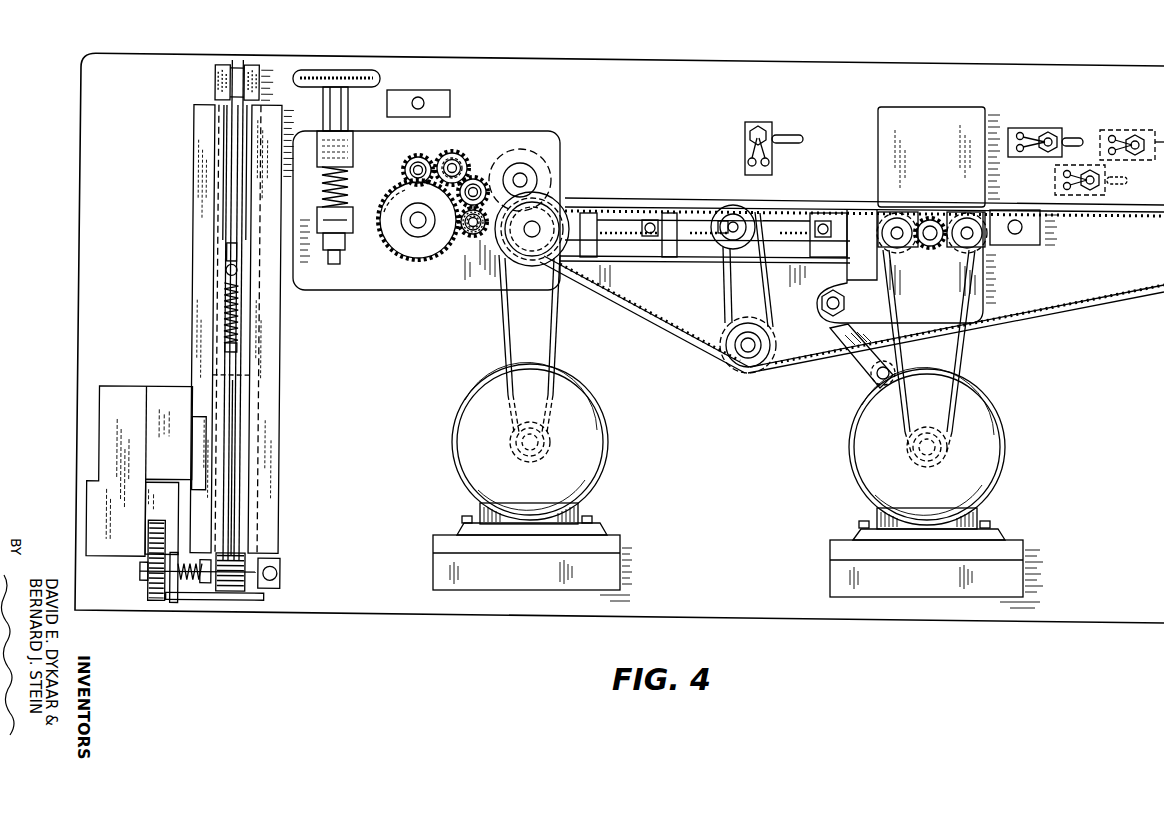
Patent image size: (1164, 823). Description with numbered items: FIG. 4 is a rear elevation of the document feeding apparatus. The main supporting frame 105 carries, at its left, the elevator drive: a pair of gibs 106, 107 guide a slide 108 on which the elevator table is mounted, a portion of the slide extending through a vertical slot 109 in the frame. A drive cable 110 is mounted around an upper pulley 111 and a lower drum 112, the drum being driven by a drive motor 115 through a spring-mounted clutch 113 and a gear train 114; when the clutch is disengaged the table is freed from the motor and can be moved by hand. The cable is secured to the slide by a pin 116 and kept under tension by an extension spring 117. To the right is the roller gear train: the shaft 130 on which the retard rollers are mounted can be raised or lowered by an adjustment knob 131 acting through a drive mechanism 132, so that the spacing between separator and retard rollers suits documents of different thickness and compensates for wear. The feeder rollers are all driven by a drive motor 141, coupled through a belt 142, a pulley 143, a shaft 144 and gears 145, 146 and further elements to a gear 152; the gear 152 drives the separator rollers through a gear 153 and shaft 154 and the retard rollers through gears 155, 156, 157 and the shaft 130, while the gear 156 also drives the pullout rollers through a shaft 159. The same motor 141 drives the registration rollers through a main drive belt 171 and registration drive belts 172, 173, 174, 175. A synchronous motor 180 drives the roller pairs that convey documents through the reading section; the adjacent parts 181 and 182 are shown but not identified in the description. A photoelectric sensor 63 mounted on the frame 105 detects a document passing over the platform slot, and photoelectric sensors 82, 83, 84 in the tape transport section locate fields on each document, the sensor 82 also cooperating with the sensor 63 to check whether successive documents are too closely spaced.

The main supporting frame 105 is at (78, 183).
The gib 106 is at (192, 140).
The gib 107 is at (280, 318).
The slide 108 is at (245, 353).
The vertical slot 109 is at (230, 185).
The drive cable 110 is at (240, 407).
The upper pulley 111 is at (237, 62).
The lower drum 112 is at (231, 592).
The spring-mounted clutch 113 is at (196, 586).
The gear train 114 is at (142, 580).
The drive motor 115 is at (170, 385).
The pin 116 is at (225, 270).
The extension spring 117 is at (224, 292).
The shaft 130 is at (410, 218).
The adjustment knob 131 is at (376, 84).
The drive mechanism 132 is at (318, 216).
The drive motor 141 is at (610, 432).
The belt 142 is at (500, 340).
The pulley 143 is at (520, 272).
The shaft 144 is at (537, 226).
The gear 145 is at (562, 205).
The gear 146 is at (542, 150).
The gear 152 is at (462, 152).
The gear 153 is at (420, 160).
The shaft 154 is at (400, 165).
The gear 155 is at (477, 177).
The gear 156 is at (466, 245).
The gear 157 is at (434, 258).
The shaft 159 is at (471, 226).
The main drive belt 171 is at (660, 338).
The registration drive belt 172 is at (772, 312).
The registration drive belt 173 is at (623, 243).
The registration drive belt 174 is at (707, 240).
The registration drive belt 175 is at (798, 218).
The synchronous motor 180 is at (1008, 418).
The belt 181 is at (964, 350).
The lever 182 is at (862, 372).
The photoelectric sensor 63 is at (763, 122).
The photoelectric sensor 82 is at (1029, 126).
The photoelectric sensor 83 is at (1054, 178).
The photoelectric sensor 84 is at (1128, 128).